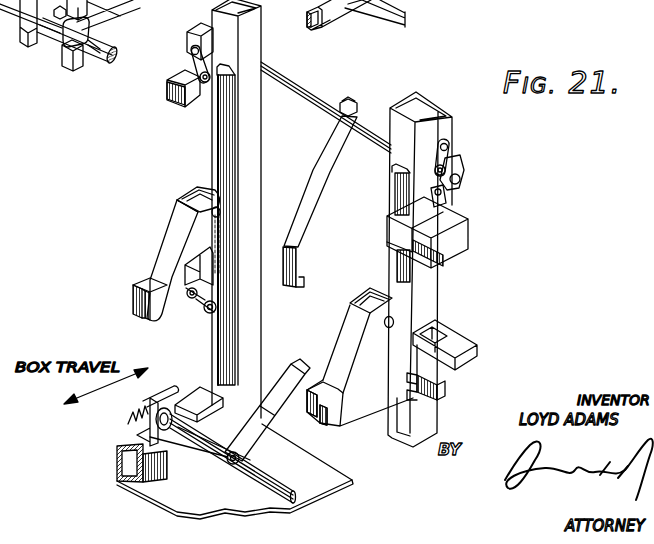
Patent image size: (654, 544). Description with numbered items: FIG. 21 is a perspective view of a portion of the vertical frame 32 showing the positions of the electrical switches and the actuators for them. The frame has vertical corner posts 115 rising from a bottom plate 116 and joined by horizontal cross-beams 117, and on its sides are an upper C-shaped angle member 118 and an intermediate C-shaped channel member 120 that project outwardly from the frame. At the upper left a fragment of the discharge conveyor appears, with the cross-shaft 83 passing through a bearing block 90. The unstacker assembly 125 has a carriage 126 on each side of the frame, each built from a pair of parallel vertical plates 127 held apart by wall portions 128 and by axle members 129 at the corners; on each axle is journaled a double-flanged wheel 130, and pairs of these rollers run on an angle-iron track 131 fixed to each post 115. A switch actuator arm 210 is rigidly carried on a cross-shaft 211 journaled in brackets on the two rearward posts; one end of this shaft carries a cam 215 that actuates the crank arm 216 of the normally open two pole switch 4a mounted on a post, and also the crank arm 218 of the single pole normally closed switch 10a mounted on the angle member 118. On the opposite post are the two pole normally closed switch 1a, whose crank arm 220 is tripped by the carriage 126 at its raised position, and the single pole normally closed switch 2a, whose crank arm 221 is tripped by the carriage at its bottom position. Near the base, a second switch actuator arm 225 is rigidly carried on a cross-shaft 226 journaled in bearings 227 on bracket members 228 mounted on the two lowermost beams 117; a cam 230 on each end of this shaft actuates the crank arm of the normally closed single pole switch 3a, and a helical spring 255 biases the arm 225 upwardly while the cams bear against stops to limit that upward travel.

The two pole normally closed switch 1a is at (188, 31).
The single pole normally closed switch 2a is at (207, 288).
The single pole switch 3a is at (196, 390).
The two pole switch 4a is at (454, 118).
The single pole normally closed switch 10a is at (443, 222).
The vertical frame 32 is at (445, 272).
The cross-shaft 83 is at (104, 64).
The bearing block 90 is at (52, 40).
The vertical corner post 115 is at (250, 141).
The bottom plate 116 is at (322, 488).
The horizontal cross-beam 117 is at (133, 441).
The upper C-shaped angle member 118 is at (465, 237).
The intermediate C-shaped channel member 120 is at (470, 358).
The unstacker assembly 125 is at (148, 262).
The carriage 126 is at (363, 410).
The vertical plate 127 is at (196, 226).
The wall portion 128 is at (170, 241).
The axle member 129 is at (221, 213).
The double-flanged wheel 130 is at (196, 192).
The track 131 is at (228, 156).
The switch actuator arm 210 is at (303, 217).
The cross-shaft 211 is at (316, 97).
The cam 215 is at (464, 173).
The crank arm 216 is at (449, 156).
The crank arm 218 is at (446, 199).
The crank arm 220 is at (205, 90).
The crank arm 221 is at (201, 309).
The switch actuator arm 225 is at (284, 378).
The cross-shaft 226 is at (277, 486).
The bearing 227 is at (168, 428).
The bracket member 228 is at (160, 445).
The cam 230 is at (162, 397).
The spring 255 is at (128, 418).